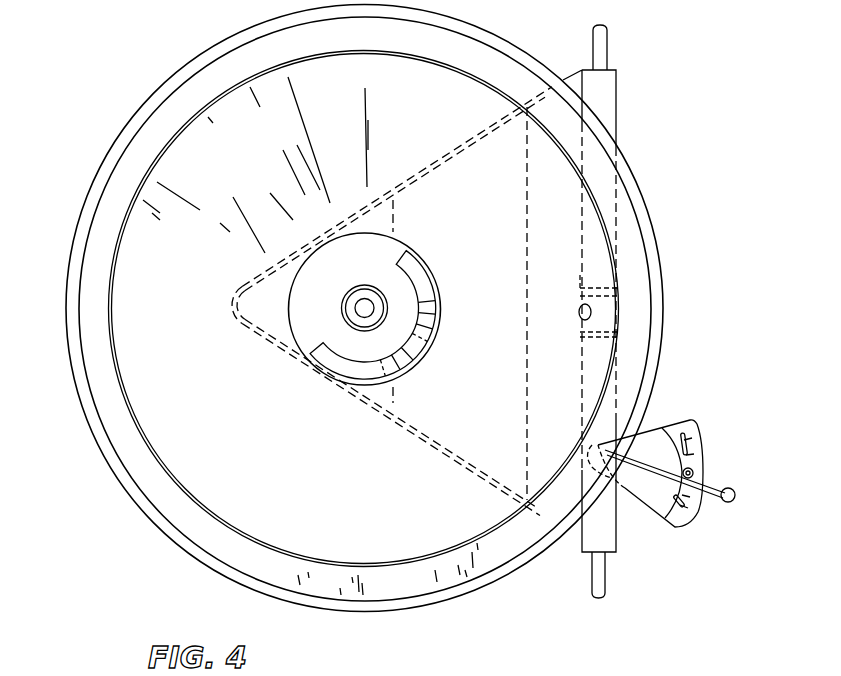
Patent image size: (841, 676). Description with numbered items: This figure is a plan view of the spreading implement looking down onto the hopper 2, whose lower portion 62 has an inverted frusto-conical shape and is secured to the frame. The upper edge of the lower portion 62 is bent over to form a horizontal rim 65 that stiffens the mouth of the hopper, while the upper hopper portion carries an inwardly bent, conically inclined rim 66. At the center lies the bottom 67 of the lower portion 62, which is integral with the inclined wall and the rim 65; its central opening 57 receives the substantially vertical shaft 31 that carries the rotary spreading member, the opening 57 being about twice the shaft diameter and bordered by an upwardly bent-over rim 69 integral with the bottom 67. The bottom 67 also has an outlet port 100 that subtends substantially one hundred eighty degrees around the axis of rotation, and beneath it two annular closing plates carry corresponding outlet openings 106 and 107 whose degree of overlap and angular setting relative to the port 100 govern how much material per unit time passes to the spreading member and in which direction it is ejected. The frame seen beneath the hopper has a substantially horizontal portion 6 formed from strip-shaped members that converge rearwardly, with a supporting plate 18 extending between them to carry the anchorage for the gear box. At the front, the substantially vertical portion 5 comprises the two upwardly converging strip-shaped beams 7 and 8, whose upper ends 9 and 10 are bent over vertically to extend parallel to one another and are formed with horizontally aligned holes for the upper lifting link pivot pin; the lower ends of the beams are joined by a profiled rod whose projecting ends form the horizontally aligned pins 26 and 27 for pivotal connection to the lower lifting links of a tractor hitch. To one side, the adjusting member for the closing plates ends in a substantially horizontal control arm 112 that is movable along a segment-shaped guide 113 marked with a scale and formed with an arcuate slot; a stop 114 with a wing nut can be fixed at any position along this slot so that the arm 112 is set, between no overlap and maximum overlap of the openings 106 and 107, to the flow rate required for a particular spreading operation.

The hopper 2 is at (105, 161).
The horizontal rim 65 is at (188, 73).
The conically inclined rim 66 is at (355, 40).
The lower portion of the hopper 62 is at (477, 92).
The supporting plate 18 is at (500, 232).
The substantially horizontal portion 6 is at (351, 407).
The bottom 67 is at (334, 248).
The upwardly bent-over rim 69 is at (376, 270).
The central opening 57 is at (352, 316).
The shaft 31 is at (357, 307).
The outlet port 100 is at (420, 278).
The outlet opening 106 is at (436, 312).
The outlet opening 107 is at (448, 333).
The substantially vertical portion 5 is at (618, 99).
The strip-shaped beam 8 is at (610, 118).
The pin 27 is at (606, 43).
The pin 26 is at (606, 583).
The strip-shaped beam 7 is at (588, 545).
The upper end 10 is at (580, 275).
The upper end 9 is at (578, 340).
The segment-shaped guide 113 is at (647, 502).
The stop 114 is at (697, 448).
The control arm 112 is at (708, 488).